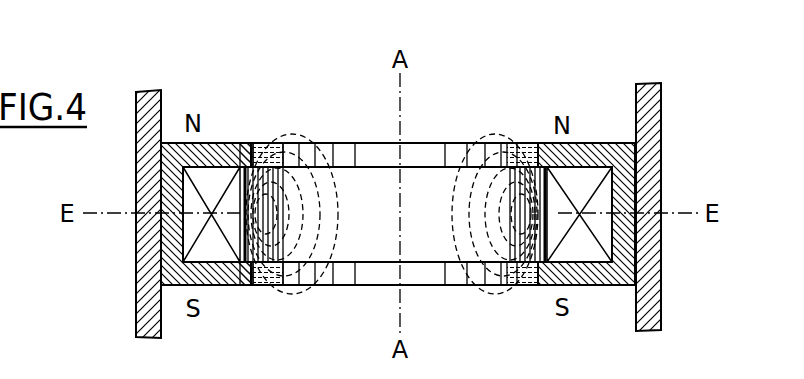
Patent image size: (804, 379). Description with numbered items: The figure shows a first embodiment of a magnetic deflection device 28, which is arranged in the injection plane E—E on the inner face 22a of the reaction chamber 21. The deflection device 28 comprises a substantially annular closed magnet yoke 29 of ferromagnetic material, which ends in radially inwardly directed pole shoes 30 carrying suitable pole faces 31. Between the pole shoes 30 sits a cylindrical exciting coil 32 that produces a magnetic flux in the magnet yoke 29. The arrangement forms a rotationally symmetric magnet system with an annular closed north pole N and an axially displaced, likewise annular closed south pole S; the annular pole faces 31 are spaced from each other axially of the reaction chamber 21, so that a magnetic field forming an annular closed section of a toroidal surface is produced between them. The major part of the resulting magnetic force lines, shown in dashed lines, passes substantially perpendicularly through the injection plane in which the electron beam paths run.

The reaction chamber 21 is at (398, 169).
The inner face 22a is at (634, 108).
The magnetic deflection device 28 is at (386, 194).
The magnet yoke 29 is at (623, 250).
The pole shoes 30 is at (237, 149).
The pole faces 31 is at (259, 156).
The exciting coil 32 is at (193, 238).